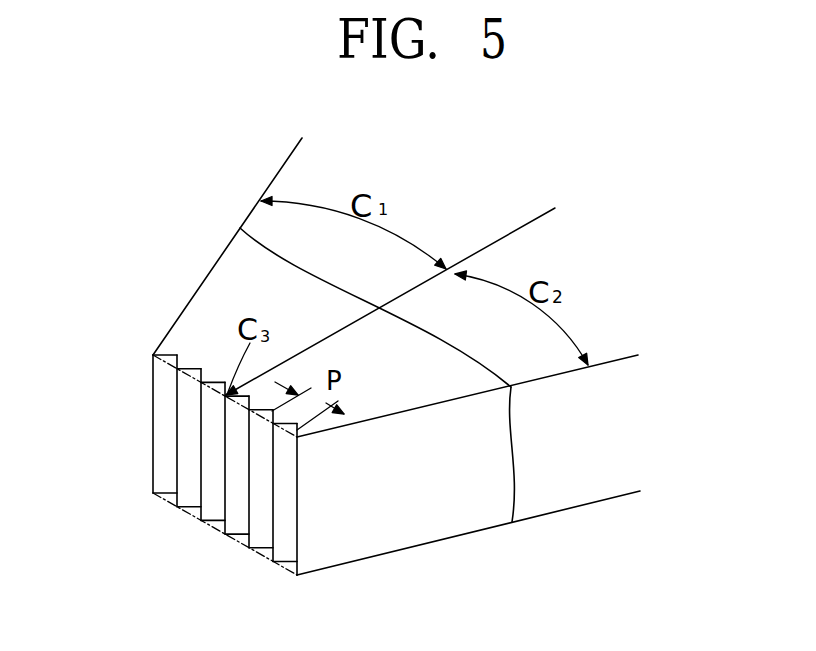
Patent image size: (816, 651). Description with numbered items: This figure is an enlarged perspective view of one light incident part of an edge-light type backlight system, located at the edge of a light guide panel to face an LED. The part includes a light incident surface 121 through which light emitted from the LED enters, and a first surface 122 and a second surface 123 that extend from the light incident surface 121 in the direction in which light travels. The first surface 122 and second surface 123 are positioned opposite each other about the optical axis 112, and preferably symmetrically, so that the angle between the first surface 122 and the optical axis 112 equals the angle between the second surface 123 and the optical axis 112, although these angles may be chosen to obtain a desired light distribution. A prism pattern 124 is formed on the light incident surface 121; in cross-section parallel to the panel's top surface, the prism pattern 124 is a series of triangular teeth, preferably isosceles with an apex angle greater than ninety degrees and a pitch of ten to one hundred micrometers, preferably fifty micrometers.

The optical axis 112 is at (526, 224).
The light incident surface 121 is at (162, 419).
The first surface 122 is at (188, 303).
The second surface 123 is at (430, 520).
The prism pattern 124 is at (262, 410).